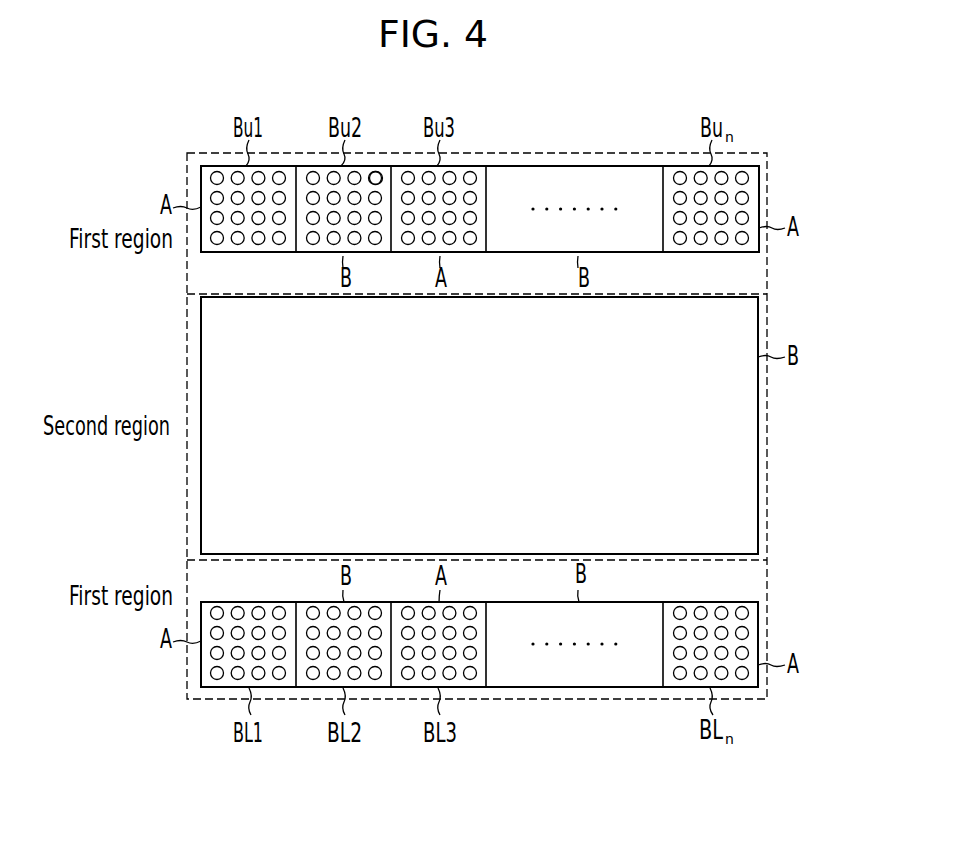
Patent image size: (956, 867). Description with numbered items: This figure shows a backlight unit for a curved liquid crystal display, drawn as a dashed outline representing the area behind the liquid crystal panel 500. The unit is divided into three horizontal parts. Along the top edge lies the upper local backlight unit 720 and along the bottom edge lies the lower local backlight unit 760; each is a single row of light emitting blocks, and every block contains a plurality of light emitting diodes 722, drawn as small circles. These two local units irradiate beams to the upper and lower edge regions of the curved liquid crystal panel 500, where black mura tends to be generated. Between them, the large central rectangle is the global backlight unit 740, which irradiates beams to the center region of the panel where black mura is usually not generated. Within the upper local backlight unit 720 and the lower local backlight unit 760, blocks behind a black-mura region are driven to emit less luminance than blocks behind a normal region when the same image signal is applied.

The liquid crystal panel 500 is at (768, 310).
The upper local backlight unit 720 is at (760, 184).
The light emitting diode 722 is at (376, 172).
The global backlight unit 740 is at (758, 425).
The lower local backlight unit 760 is at (758, 620).